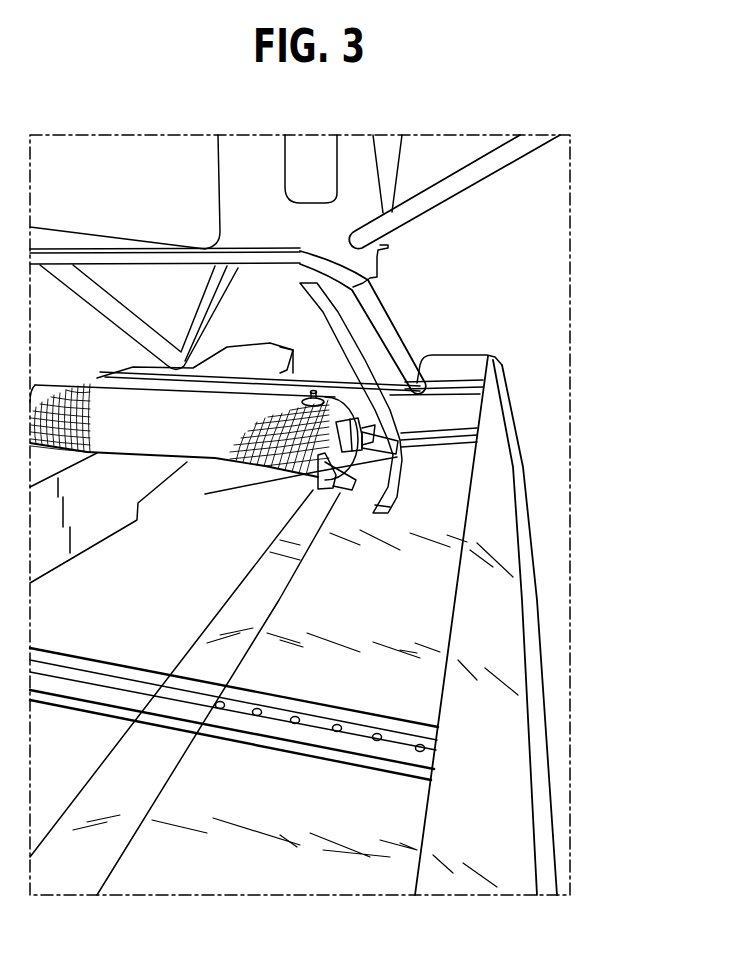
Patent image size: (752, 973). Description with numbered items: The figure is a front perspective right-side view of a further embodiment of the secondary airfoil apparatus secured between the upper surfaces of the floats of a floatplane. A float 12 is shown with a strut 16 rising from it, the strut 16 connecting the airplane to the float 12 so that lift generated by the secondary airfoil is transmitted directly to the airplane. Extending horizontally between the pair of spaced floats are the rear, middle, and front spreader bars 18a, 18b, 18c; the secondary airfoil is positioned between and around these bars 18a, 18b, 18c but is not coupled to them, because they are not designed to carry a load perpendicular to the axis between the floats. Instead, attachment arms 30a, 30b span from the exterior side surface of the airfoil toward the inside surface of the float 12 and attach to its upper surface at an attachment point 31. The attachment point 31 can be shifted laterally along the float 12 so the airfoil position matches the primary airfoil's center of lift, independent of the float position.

The float 12 is at (513, 811).
The strut 16 is at (372, 358).
The rear spreader bar 18a is at (405, 750).
The middle spreader bar 18b is at (450, 432).
The front spreader bar 18c is at (452, 387).
The attachment arm 30a is at (350, 477).
The middle attachment arm 30b is at (343, 431).
The attachment point 31 is at (362, 448).